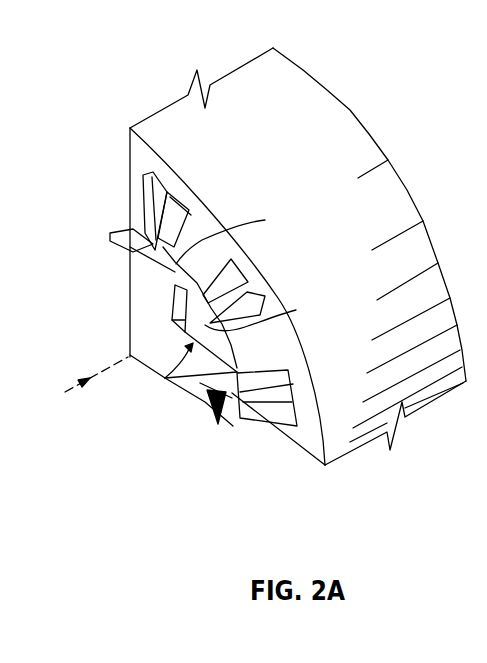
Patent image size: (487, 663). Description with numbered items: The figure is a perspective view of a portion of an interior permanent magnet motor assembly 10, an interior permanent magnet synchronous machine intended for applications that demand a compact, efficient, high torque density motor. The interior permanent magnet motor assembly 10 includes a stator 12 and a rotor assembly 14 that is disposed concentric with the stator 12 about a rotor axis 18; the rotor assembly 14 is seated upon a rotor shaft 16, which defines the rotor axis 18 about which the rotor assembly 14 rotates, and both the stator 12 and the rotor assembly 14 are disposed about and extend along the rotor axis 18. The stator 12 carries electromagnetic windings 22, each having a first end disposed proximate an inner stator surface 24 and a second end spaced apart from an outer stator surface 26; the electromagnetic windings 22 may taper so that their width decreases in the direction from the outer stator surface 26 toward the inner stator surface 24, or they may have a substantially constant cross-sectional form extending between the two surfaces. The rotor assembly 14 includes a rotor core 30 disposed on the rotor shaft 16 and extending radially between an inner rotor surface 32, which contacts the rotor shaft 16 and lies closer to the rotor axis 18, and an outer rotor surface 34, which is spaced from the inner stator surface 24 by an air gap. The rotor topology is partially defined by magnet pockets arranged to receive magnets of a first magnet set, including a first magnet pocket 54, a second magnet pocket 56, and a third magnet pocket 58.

The interior permanent magnet motor assembly 10 is at (80, 172).
The stator 12 is at (331, 73).
The rotor assembly 14 is at (144, 399).
The rotor shaft 16 is at (128, 343).
The rotor axis 18 is at (66, 364).
The electromagnetic windings 22 is at (176, 186).
The inner stator surface 24 is at (235, 236).
The outer stator surface 26 is at (287, 83).
The rotor core 30 is at (166, 380).
The inner rotor surface 32 is at (165, 378).
The outer rotor surface 34 is at (296, 310).
The first magnet pocket 54 is at (167, 291).
The second magnet pocket 56 is at (165, 378).
The third magnet pocket 58 is at (124, 254).